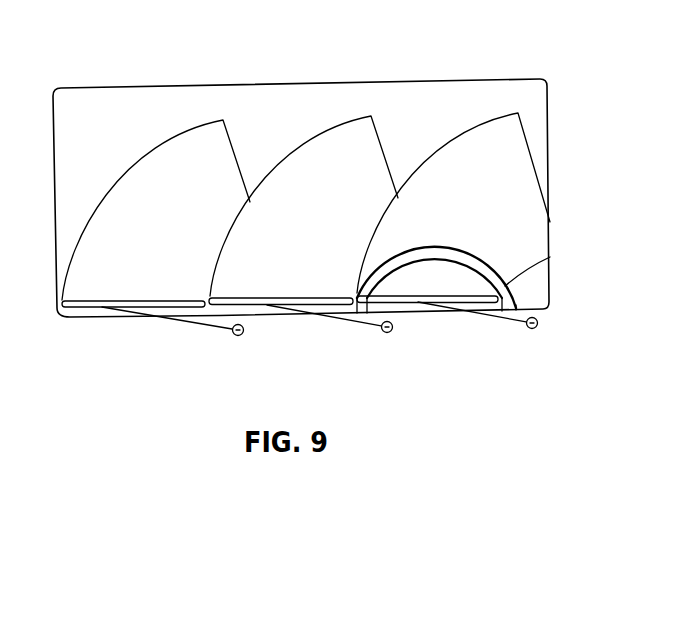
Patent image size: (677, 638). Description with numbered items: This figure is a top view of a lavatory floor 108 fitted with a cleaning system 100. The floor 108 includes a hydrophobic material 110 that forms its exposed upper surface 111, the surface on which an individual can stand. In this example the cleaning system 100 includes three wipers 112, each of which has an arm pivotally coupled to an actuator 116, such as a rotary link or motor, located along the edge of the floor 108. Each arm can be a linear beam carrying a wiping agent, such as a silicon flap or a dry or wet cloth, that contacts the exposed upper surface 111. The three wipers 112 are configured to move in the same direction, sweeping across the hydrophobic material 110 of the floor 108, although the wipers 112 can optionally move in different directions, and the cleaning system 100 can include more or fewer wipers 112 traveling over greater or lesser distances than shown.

The cleaning system 100 is at (341, 216).
The floor 108 is at (283, 105).
The hydrophobic material 110 is at (403, 100).
The exposed upper surface 111 is at (203, 92).
The wiper 112 is at (102, 308).
The actuator 116 is at (244, 332).